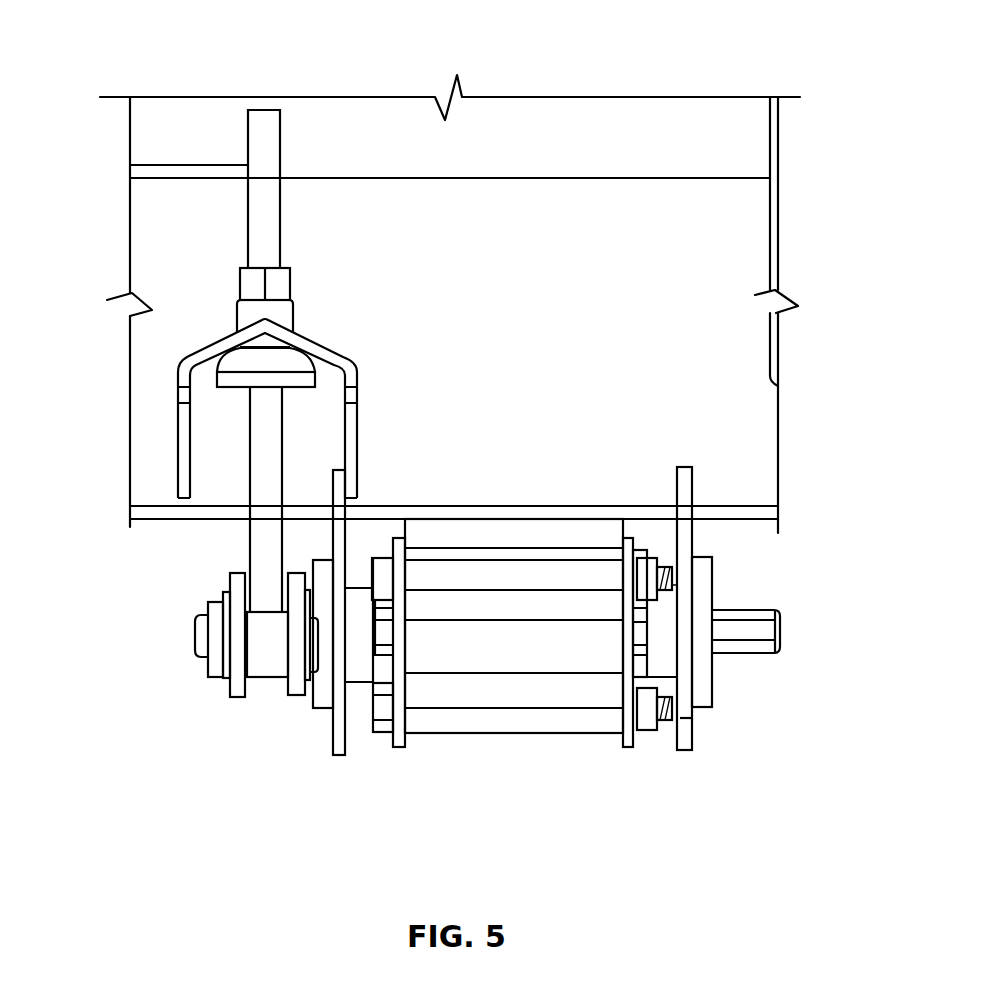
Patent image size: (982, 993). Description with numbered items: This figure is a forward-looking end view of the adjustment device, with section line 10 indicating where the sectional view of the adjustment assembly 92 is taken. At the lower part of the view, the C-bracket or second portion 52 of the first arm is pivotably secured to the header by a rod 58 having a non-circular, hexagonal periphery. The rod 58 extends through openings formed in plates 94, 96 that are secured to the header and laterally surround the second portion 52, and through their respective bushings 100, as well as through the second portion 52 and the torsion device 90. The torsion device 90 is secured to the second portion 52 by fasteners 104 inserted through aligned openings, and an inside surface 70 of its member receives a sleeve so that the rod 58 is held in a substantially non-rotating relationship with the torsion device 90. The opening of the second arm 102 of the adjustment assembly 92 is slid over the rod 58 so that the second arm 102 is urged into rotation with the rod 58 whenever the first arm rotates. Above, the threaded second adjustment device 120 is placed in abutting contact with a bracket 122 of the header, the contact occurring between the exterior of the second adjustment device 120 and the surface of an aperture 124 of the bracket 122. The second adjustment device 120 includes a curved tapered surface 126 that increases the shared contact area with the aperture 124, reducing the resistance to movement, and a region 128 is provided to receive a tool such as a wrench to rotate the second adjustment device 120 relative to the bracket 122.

The section line 10- 10 is at (263, 108).
The second portion 52 is at (635, 742).
The rod 58 is at (758, 608).
The inside surface 70 is at (310, 683).
The torsion device 90 is at (523, 735).
The adjustment assembly 92 is at (180, 607).
The plate 94 is at (695, 730).
The plate 96 is at (333, 739).
The bushing 100 is at (350, 682).
The second arm 102 is at (230, 580).
The fastener 104 is at (390, 738).
The second adjustment device 120 is at (232, 316).
The bracket 122 is at (178, 433).
The aperture 124 is at (228, 337).
The tapered surface 126 is at (296, 353).
The region 128 is at (240, 277).